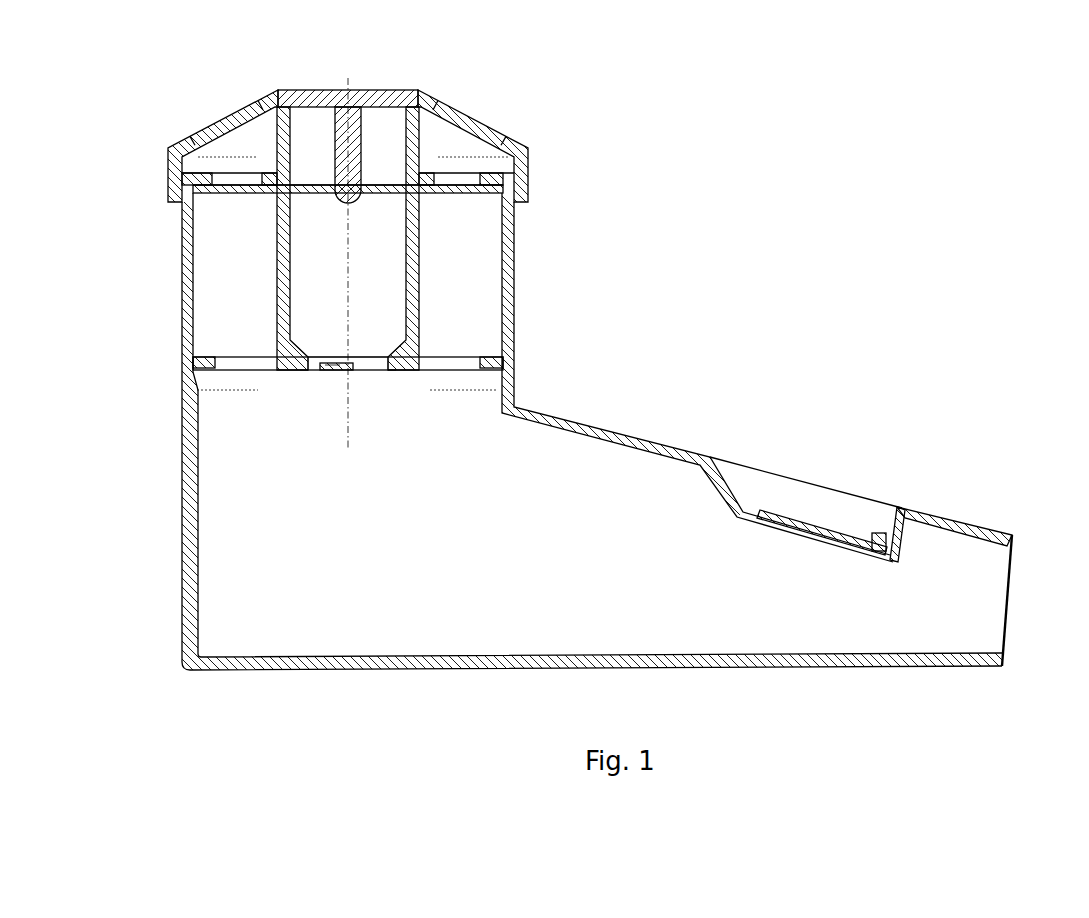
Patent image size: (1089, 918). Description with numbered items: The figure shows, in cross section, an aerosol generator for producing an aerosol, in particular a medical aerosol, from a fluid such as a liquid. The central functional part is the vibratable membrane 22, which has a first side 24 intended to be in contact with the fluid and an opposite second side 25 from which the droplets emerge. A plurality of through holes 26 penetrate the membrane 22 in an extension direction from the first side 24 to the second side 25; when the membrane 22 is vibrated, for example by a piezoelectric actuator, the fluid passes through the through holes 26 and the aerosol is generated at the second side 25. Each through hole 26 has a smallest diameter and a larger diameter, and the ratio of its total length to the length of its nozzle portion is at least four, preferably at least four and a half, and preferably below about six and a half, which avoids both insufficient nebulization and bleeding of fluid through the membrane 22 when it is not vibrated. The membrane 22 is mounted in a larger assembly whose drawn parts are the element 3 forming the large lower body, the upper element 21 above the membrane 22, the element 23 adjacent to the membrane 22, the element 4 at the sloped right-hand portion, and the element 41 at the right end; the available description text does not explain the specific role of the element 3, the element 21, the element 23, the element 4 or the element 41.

The housing body 3 is at (370, 554).
The cap 21 is at (392, 295).
The vibratable membrane 22 is at (362, 370).
The left opening 23 is at (303, 371).
The first side 24 is at (325, 362).
The second side 25 is at (334, 374).
The through holes 26 is at (380, 371).
The cover 4 is at (937, 518).
The side wall 41 is at (995, 605).